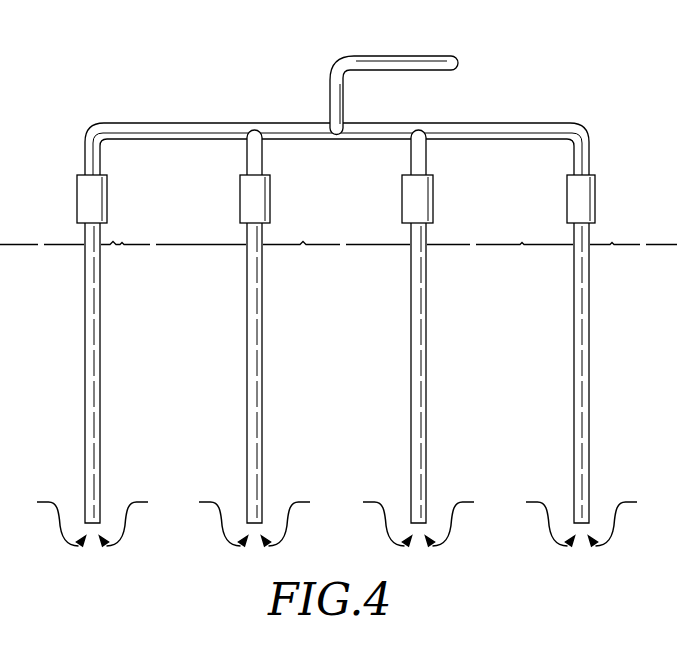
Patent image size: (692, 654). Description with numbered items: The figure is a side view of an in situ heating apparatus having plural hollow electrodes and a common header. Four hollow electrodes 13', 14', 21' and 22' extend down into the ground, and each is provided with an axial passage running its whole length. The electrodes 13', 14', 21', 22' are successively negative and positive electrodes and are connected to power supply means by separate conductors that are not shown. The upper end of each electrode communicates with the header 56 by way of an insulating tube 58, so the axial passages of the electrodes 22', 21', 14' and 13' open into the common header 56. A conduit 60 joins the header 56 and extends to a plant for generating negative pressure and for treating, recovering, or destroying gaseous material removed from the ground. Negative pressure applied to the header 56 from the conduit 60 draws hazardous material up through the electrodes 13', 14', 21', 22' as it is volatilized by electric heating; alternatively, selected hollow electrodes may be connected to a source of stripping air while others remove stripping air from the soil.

The header 56 is at (187, 122).
The conduit 60 is at (392, 56).
The insulating tube 58 is at (240, 189).
The hollow electrode 22' is at (121, 361).
The hollow electrode 21' is at (290, 326).
The hollow electrode 14' is at (450, 326).
The hollow electrode 13' is at (614, 361).